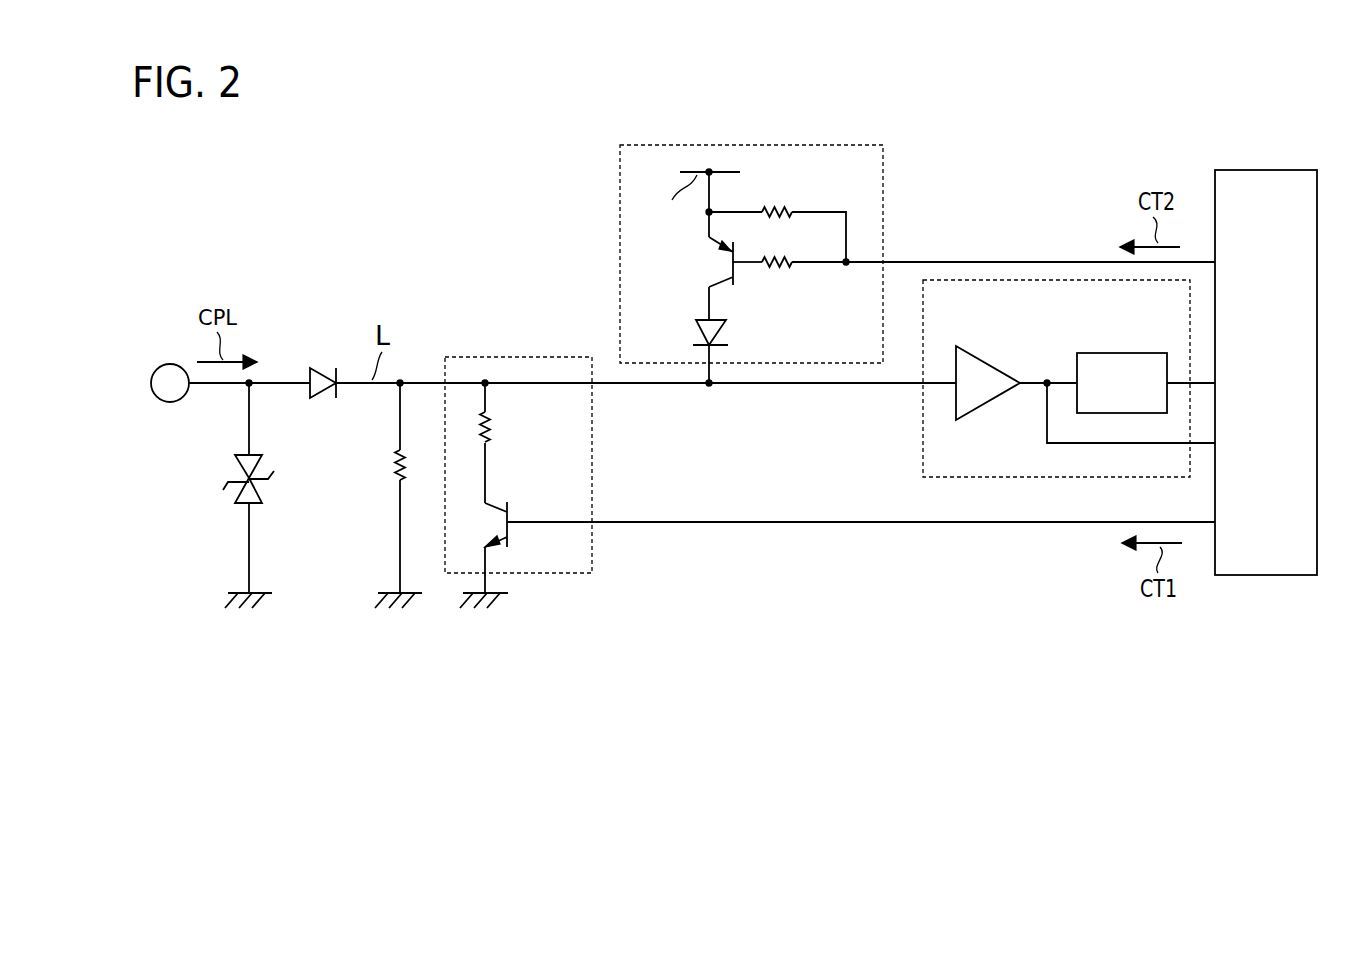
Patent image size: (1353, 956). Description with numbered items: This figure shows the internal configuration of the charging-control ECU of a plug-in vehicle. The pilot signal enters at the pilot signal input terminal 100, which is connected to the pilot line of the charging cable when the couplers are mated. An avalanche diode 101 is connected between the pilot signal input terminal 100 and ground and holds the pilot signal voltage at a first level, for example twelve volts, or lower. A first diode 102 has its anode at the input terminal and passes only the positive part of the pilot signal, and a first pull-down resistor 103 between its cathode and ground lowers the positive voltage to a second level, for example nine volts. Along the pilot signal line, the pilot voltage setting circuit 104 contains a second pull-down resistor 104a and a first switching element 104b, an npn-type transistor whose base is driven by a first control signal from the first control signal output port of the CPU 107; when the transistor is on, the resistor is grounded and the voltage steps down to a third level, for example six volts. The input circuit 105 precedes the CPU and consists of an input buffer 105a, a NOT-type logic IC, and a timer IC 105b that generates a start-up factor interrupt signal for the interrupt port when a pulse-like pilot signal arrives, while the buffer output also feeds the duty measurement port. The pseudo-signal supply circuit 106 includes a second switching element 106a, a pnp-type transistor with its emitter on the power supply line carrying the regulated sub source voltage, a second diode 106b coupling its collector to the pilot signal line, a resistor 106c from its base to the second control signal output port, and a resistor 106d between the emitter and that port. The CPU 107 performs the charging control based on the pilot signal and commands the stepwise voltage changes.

The pilot signal input terminal 100 is at (150, 383).
The avalanche diode 101 is at (260, 507).
The first diode 102 is at (312, 398).
The first pull-down resistor 103 is at (395, 472).
The pilot voltage setting circuit 104 is at (518, 450).
The second pull-down resistor 104a is at (488, 423).
The first switching element 104b is at (510, 527).
The input circuit 105 is at (1032, 378).
The input buffer 105a is at (987, 360).
The timer IC 105b is at (1125, 352).
The pseudo-signal supply circuit 106 is at (788, 264).
The second switching element 106a is at (732, 270).
The second diode 106b is at (723, 327).
The resistor 106c is at (785, 268).
The resistor 106d is at (827, 192).
The CPU 107 is at (1263, 168).